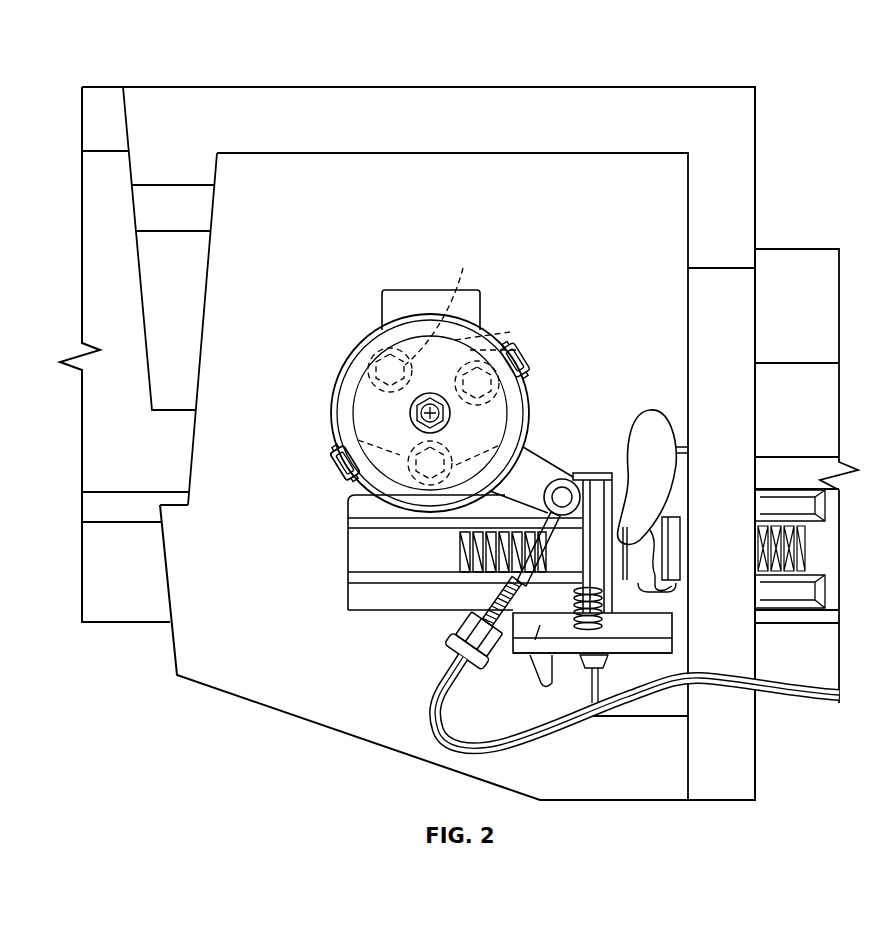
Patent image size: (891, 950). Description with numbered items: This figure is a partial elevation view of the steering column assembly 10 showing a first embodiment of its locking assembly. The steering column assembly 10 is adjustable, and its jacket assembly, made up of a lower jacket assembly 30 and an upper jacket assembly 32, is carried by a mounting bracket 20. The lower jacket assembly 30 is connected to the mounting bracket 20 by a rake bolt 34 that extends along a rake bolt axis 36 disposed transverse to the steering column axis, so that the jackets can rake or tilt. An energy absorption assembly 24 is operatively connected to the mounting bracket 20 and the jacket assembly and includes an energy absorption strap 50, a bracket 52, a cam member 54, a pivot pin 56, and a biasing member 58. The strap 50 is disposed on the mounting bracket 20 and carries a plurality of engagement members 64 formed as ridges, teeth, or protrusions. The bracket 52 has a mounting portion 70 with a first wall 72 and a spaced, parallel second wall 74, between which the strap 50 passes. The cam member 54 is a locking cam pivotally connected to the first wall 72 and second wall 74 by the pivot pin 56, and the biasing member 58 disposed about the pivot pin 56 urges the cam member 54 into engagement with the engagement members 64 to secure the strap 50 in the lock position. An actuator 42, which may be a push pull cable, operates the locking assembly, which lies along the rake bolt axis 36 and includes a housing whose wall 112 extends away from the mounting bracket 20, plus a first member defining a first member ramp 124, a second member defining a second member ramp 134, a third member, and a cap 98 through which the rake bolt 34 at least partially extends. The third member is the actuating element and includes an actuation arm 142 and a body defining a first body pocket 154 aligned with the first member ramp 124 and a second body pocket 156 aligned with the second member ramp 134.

The steering column assembly 10 is at (808, 70).
The mounting bracket 20 is at (598, 86).
The energy absorption assembly 24 is at (352, 616).
The lower jacket assembly 30 is at (93, 583).
The upper jacket assembly 32 is at (797, 263).
The rake bolt 34 is at (435, 395).
The rake bolt axis 36 is at (522, 363).
The actuator 42 is at (458, 640).
The energy absorption strap 50 is at (352, 553).
The bracket 52 is at (690, 692).
The cam member 54 is at (668, 548).
The pivot pin 56 is at (577, 476).
The biasing member 58 is at (540, 667).
The plurality of engagement members 64 is at (462, 582).
The mounting portion 70 is at (660, 607).
The first wall 72 is at (650, 660).
The second wall 74 is at (597, 473).
The cap 98 is at (392, 346).
The wall 112 is at (415, 327).
The first member ramp 124 is at (340, 363).
The second member ramp 134 is at (457, 290).
The actuation arm 142 is at (648, 440).
The first body pocket 154 is at (333, 461).
The second body pocket 156 is at (345, 463).